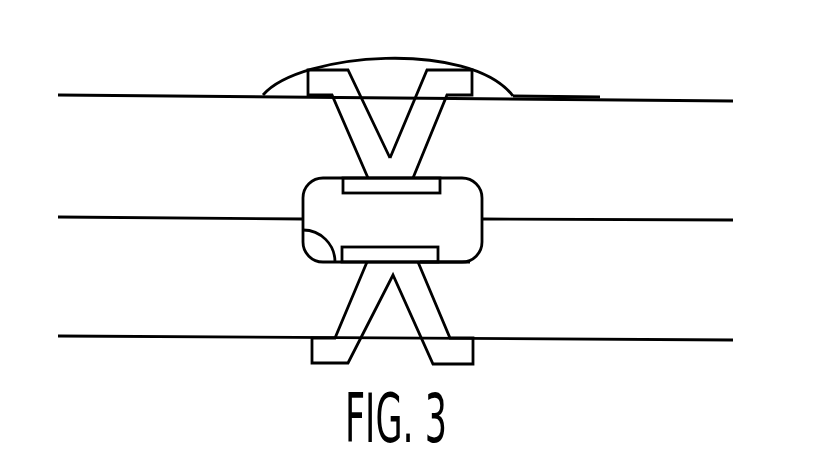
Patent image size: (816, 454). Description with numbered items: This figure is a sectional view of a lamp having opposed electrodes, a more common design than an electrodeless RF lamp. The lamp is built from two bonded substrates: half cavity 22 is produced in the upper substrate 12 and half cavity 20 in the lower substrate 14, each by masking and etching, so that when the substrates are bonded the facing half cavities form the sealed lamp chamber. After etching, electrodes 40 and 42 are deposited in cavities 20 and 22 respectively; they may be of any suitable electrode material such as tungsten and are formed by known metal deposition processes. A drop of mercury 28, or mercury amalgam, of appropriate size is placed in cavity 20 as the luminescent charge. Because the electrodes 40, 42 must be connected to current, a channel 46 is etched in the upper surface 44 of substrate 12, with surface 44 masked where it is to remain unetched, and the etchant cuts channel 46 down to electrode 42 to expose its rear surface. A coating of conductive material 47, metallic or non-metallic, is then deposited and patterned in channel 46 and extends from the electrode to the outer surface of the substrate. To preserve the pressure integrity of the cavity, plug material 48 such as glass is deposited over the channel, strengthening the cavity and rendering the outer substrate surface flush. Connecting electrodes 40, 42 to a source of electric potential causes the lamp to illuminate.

The substrate 12 is at (665, 115).
The substrate 14 is at (632, 341).
The cavity 20 is at (478, 263).
The cavity 22 is at (481, 183).
The drop of mercury 28 is at (303, 242).
The electrode 40 is at (395, 246).
The electrode 42 is at (358, 195).
The upper surface 44 is at (530, 96).
The channel 46 is at (434, 133).
The coating of conductive material 47 is at (338, 117).
The plug material 48 is at (392, 51).